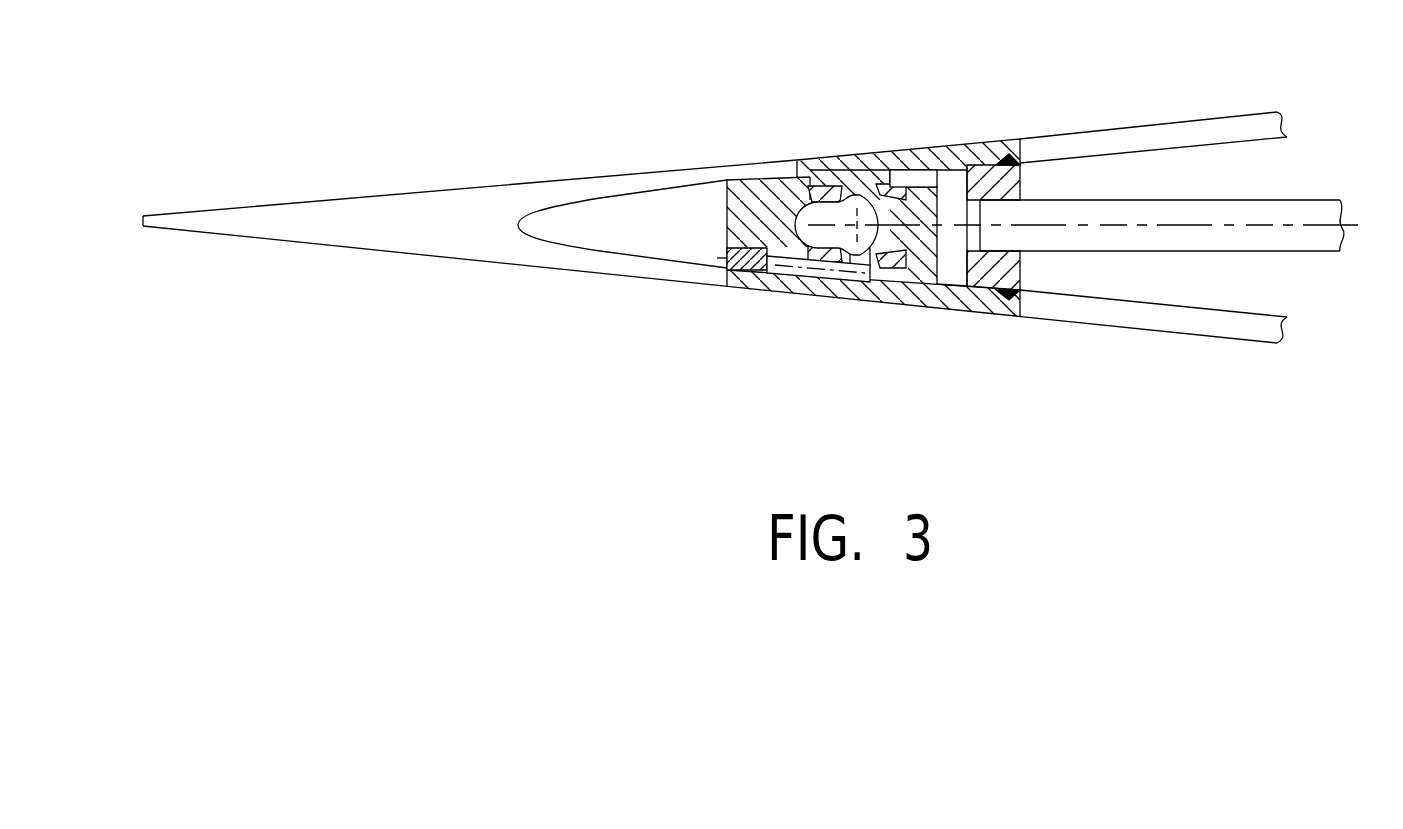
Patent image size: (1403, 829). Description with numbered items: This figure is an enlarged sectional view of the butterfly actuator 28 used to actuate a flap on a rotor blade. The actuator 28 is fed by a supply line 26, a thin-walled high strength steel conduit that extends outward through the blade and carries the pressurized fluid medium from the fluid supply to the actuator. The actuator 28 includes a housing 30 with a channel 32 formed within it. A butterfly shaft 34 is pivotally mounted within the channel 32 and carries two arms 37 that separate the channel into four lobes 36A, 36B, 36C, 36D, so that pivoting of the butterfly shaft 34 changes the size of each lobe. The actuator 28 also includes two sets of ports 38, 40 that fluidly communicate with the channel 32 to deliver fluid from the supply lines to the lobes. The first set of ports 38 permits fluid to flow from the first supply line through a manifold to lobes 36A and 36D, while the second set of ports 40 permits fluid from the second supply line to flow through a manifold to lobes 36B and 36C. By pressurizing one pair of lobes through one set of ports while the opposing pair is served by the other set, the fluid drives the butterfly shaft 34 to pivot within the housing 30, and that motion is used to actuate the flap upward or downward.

The supply line 26 is at (1293, 198).
The actuator 28 is at (862, 178).
The housing 30 is at (989, 164).
The channel 32 is at (917, 307).
The butterfly shaft 34 is at (863, 252).
The lobe 36A is at (828, 186).
The lobe 36B is at (880, 184).
The lobe 36C is at (818, 253).
The lobe 36D is at (890, 255).
The arm 37 is at (763, 157).
The first set of ports 38 is at (903, 170).
The second set of ports 40 is at (833, 278).